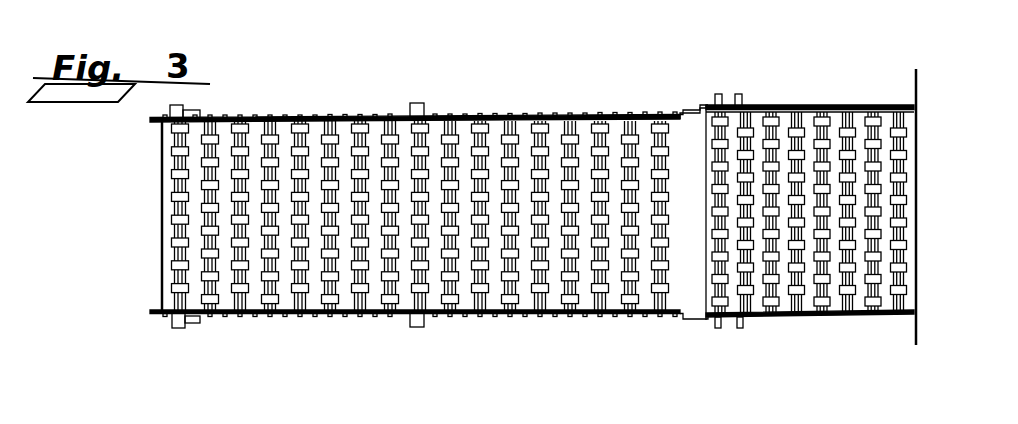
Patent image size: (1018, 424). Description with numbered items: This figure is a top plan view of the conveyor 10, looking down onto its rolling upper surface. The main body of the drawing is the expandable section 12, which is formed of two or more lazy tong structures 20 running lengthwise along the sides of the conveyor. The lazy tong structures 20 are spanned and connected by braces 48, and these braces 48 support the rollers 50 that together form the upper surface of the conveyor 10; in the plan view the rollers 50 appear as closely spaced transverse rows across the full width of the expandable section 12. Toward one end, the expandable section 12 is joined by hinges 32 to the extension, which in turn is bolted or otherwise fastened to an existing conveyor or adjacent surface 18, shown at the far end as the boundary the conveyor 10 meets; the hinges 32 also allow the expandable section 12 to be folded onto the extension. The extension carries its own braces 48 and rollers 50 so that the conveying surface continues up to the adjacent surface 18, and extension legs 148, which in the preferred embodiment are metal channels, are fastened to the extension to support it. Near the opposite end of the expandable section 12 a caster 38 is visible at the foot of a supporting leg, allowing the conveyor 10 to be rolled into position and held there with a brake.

The conveyor 10 is at (256, 106).
The expandable section 12 is at (327, 106).
The existing conveyor or adjacent surface 18 is at (926, 135).
The lazy tong structure 20 is at (500, 114).
The hinge 32 is at (700, 98).
The caster 38 is at (192, 322).
The brace 48 is at (470, 296).
The roller 50 is at (390, 296).
The extension leg 148 is at (725, 326).